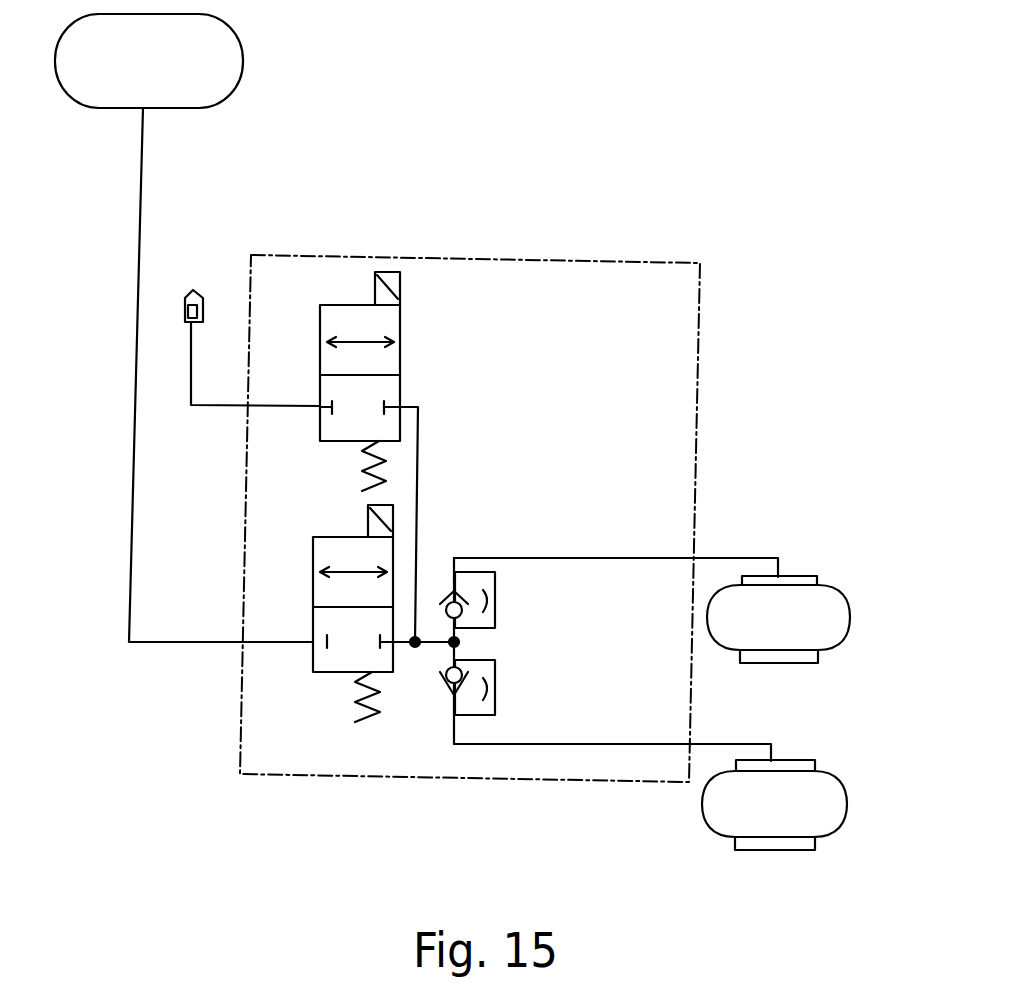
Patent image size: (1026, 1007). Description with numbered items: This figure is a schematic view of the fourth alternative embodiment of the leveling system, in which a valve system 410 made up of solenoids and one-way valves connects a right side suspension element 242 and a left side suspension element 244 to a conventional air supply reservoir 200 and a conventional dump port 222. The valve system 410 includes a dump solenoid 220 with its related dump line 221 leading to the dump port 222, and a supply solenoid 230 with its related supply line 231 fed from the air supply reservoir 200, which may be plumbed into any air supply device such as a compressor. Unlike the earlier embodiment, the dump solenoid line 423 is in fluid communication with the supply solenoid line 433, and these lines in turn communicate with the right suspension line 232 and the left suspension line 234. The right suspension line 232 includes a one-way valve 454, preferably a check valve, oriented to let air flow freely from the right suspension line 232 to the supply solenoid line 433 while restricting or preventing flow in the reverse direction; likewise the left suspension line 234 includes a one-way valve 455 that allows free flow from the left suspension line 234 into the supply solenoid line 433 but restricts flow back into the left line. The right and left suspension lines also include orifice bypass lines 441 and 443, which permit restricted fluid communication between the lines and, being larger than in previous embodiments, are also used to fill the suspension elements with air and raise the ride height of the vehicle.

The air supply reservoir 200 is at (243, 61).
The dump solenoid 220 is at (318, 331).
The dump line 221 is at (213, 405).
The dump port 222 is at (196, 292).
The supply solenoid 230 is at (313, 572).
The supply line 231 is at (208, 640).
The right suspension line 232 is at (722, 558).
The left suspension line 234 is at (728, 744).
The right side suspension element 242 is at (822, 650).
The left side suspension element 244 is at (722, 835).
The valve system 410 is at (700, 288).
The dump solenoid line 423 is at (418, 476).
The supply solenoid line 433 is at (427, 646).
The orifice bypass line 441 is at (500, 600).
The orifice bypass line 443 is at (500, 688).
The one-way valve 454 is at (447, 600).
The one-way valve 455 is at (447, 684).